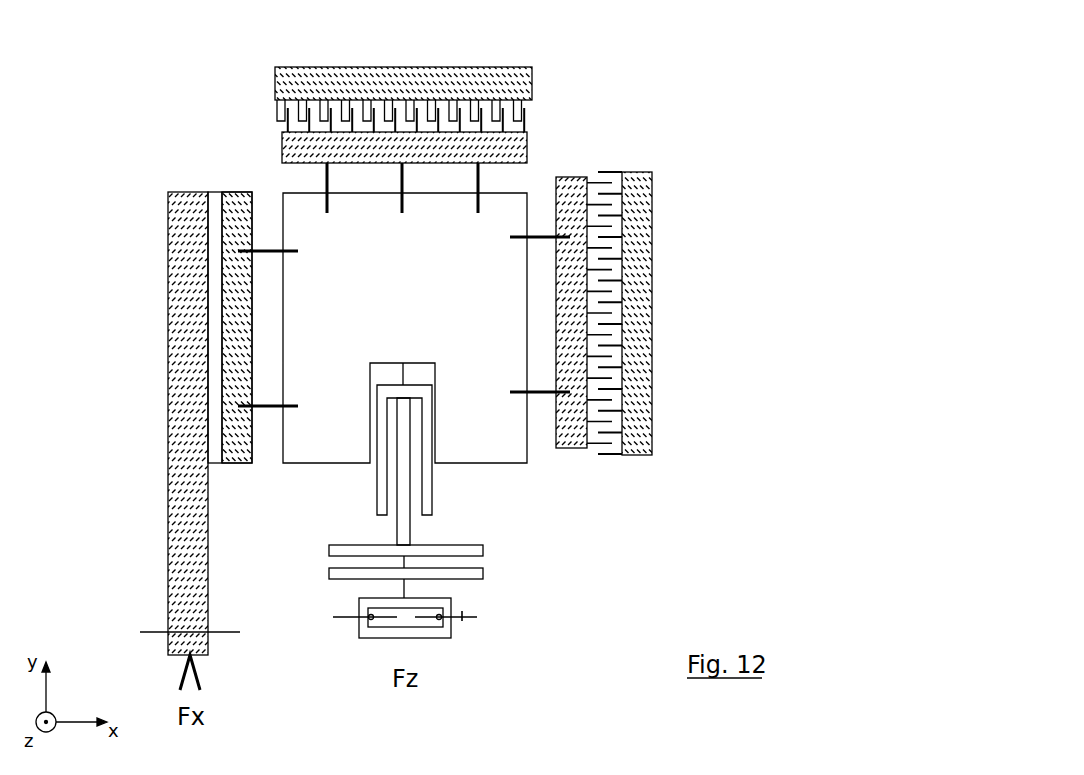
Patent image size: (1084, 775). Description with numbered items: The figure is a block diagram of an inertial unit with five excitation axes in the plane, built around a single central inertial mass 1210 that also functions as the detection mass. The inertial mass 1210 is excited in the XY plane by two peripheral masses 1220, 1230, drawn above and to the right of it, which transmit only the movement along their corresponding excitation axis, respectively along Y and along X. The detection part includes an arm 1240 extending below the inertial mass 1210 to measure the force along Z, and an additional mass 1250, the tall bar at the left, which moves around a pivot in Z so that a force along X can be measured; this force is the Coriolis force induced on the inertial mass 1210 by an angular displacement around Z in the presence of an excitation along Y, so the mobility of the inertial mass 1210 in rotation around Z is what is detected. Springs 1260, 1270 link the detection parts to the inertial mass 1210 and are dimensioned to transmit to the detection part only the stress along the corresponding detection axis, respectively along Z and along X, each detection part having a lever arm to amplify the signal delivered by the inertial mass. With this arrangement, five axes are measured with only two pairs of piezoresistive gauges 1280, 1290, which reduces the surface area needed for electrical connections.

The inertial mass 1210 is at (505, 467).
The peripheral mass 1220 is at (418, 67).
The peripheral mass 1230 is at (653, 341).
The arm 1240 is at (396, 530).
The additional mass 1250 is at (170, 508).
The spring 1260 is at (434, 505).
The spring 1270 is at (216, 192).
The pair of piezoresistive gauges 1280 is at (350, 625).
The pair of piezoresistive gauges 1290 is at (160, 634).